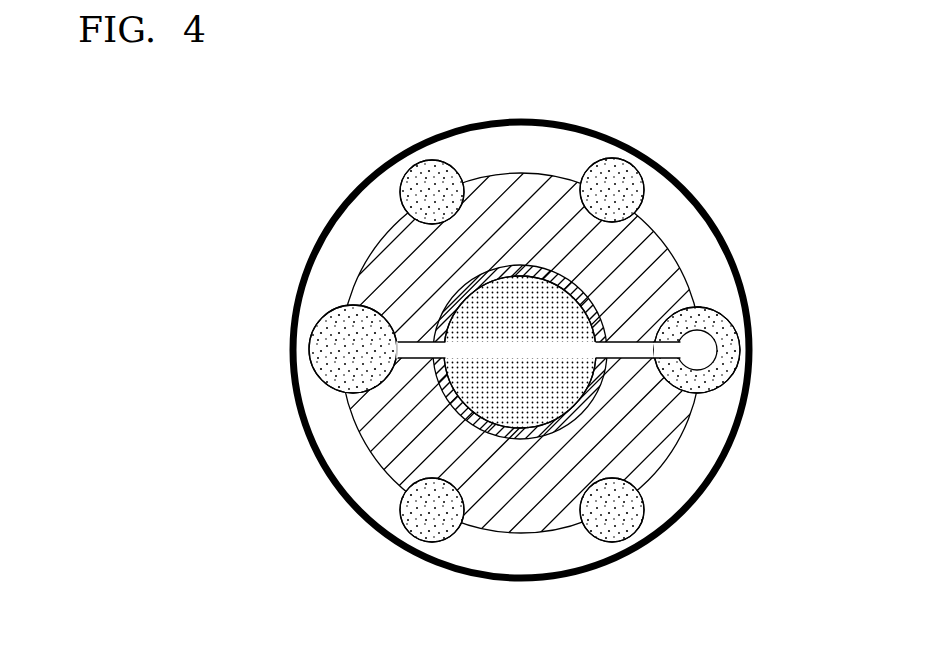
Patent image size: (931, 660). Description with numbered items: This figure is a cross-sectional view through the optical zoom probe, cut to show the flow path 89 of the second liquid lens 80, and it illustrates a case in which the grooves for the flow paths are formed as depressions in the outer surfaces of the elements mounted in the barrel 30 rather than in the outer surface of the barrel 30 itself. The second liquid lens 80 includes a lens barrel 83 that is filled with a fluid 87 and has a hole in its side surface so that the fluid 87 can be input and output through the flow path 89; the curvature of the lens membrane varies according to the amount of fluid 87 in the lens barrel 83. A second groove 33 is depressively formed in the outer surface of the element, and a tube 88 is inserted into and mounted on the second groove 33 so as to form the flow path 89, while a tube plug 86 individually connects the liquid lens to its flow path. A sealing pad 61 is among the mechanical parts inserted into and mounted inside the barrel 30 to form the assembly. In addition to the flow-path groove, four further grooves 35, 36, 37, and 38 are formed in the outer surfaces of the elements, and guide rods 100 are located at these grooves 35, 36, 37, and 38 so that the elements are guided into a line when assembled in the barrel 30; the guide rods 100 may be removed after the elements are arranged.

The barrel 30 is at (752, 372).
The second groove 33 is at (700, 310).
The groove 35 is at (462, 180).
The groove 36 is at (583, 180).
The groove 37 is at (422, 540).
The groove 38 is at (618, 537).
The sealing pad 61 is at (325, 360).
The second liquid lens 80 is at (481, 346).
The lens barrel 83 is at (653, 245).
The tube plug 86 is at (620, 360).
The fluid 87 is at (536, 365).
The tube 88 is at (745, 350).
The flow path 89 is at (702, 342).
The guide rod 100 is at (418, 178).